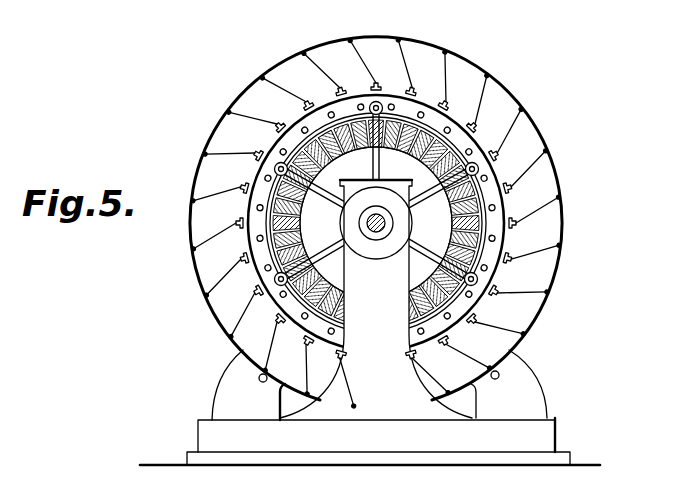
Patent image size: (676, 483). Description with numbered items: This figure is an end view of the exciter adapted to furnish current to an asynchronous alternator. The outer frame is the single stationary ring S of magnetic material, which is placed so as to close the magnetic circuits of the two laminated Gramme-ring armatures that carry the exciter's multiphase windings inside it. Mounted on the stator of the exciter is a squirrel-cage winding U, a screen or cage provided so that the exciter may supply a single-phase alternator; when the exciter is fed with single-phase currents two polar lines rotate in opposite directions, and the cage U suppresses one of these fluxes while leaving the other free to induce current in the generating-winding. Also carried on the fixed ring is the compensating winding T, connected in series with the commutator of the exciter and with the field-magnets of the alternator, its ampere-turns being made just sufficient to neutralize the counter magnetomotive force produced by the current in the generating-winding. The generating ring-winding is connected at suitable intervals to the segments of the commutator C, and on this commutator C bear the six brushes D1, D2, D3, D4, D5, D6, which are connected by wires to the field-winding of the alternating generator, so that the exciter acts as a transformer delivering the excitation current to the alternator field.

The ring of magnetic material S is at (328, 66).
The compensating winding T is at (405, 55).
The commutator C is at (413, 108).
The squirrel-cage winding U is at (261, 77).
The brush D1 is at (487, 73).
The brush D2 is at (493, 213).
The brush D3 is at (482, 302).
The brush D4 is at (300, 342).
The brush D5 is at (205, 255).
The brush D6 is at (229, 108).